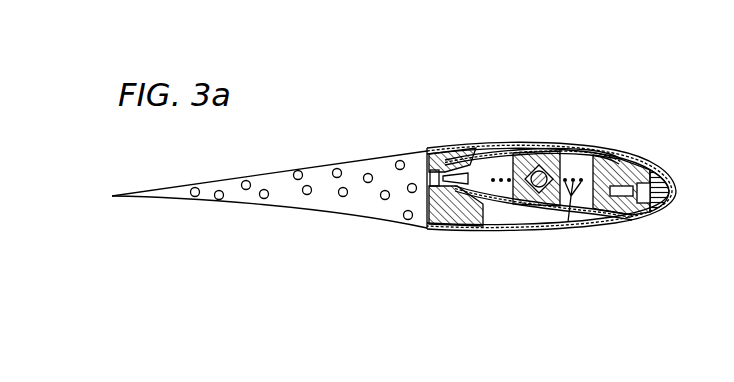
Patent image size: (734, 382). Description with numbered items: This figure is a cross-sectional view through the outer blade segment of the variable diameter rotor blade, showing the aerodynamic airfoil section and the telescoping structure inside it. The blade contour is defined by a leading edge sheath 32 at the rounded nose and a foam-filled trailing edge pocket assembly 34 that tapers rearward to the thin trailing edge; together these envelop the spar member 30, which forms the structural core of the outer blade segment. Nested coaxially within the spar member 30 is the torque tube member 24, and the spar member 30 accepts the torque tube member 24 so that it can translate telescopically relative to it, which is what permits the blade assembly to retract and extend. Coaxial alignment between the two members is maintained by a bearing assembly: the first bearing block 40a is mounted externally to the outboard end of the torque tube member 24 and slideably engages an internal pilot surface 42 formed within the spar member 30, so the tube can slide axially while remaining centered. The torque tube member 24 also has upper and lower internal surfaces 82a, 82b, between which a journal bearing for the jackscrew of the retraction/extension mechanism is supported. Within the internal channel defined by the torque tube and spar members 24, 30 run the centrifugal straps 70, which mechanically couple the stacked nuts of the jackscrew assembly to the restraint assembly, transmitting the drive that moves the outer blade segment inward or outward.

The foam-filled trailing edge pocket assembly 34 is at (283, 168).
The leading edge sheath 32 is at (679, 195).
The upper internal surface 82a is at (520, 146).
The lower internal surface 82b is at (523, 206).
The internal pilot surface 42 is at (455, 148).
The first bearing block 40a is at (441, 148).
The torque tube member 24 is at (557, 150).
The spar member 30 is at (588, 150).
The centrifugal straps 70 is at (568, 222).